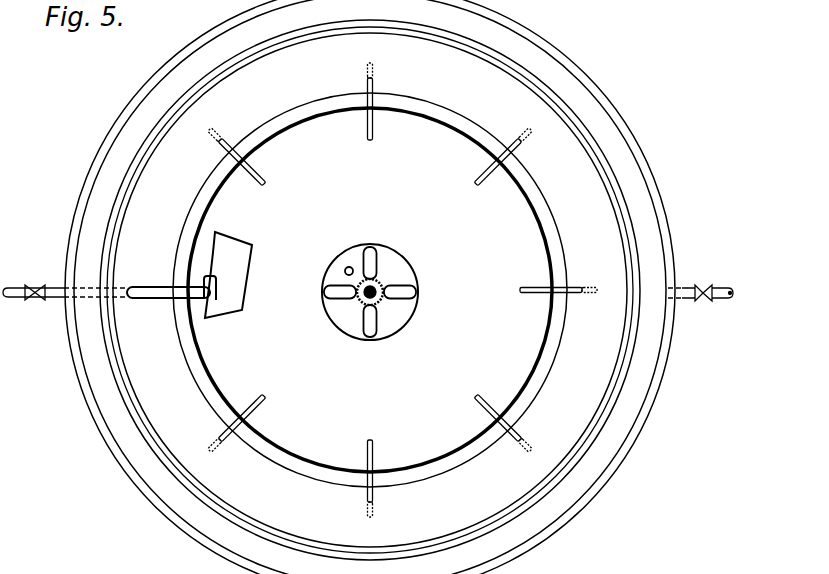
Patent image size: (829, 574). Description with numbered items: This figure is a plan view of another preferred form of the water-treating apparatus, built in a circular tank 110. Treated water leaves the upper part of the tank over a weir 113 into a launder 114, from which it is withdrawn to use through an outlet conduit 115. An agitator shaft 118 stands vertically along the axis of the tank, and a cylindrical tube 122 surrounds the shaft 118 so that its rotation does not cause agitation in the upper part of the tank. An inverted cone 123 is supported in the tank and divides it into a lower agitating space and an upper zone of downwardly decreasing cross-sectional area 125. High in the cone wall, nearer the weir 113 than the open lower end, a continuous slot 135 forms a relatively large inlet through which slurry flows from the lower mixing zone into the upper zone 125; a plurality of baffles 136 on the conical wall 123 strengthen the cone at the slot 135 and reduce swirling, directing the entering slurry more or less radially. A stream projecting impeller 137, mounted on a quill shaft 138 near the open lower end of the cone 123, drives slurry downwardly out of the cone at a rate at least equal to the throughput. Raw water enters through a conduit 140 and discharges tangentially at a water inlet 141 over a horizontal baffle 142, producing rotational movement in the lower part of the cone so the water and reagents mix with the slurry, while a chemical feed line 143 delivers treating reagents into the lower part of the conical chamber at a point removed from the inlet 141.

The tank 110 is at (582, 130).
The weir 113 is at (615, 187).
The launder 114 is at (652, 360).
The outlet conduit 115 is at (720, 302).
The agitator shaft 118 is at (385, 310).
The cylindrical tube 122 is at (345, 317).
The inverted cone 123 is at (550, 468).
The upper zone of downwardly decreasing cross-sectional area 125 is at (188, 433).
The continuous slot 135 is at (213, 380).
The baffles 136 is at (368, 138).
The impeller 137 is at (372, 327).
The quill shaft 138 is at (383, 283).
The conduit 140 is at (13, 300).
The water inlet 141 is at (205, 280).
The horizontal baffle 142 is at (246, 249).
The chemical feed line 143 is at (346, 268).